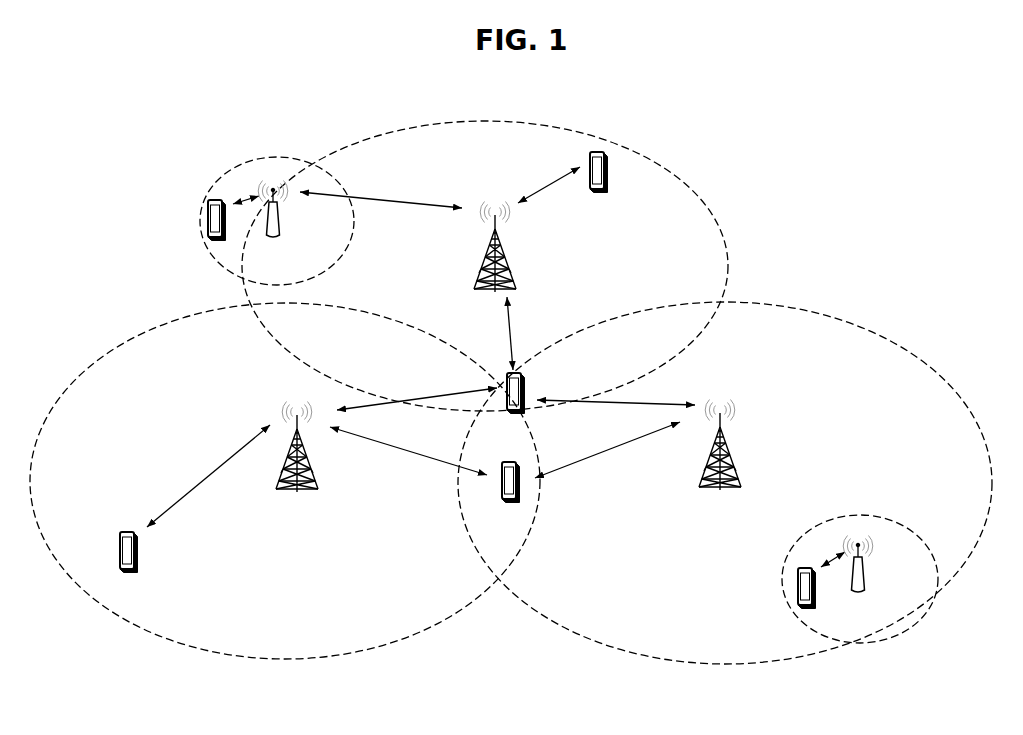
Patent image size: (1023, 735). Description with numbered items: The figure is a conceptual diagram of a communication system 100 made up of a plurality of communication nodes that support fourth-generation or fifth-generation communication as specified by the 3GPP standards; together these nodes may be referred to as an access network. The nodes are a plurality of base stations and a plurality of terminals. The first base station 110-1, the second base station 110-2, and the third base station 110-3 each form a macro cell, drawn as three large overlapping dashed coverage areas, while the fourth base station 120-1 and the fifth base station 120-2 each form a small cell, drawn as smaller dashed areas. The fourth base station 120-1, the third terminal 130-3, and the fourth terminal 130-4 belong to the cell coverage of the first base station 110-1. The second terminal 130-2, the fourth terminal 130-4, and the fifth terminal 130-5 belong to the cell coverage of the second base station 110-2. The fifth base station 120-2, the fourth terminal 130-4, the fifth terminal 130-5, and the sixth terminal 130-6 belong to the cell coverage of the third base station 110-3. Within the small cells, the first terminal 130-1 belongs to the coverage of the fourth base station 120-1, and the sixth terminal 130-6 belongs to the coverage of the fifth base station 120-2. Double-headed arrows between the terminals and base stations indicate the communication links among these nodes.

The communication system 100 is at (501, 96).
The first base station 110-1 is at (503, 256).
The second base station 110-2 is at (297, 494).
The third base station 110-3 is at (728, 456).
The fourth base station 120-1 is at (281, 220).
The fifth base station 120-2 is at (866, 572).
The first terminal 130-1 is at (207, 218).
The second terminal 130-2 is at (139, 553).
The third terminal 130-3 is at (609, 174).
The fourth terminal 130-4 is at (526, 374).
The fifth terminal 130-5 is at (514, 461).
The sixth terminal 130-6 is at (797, 585).